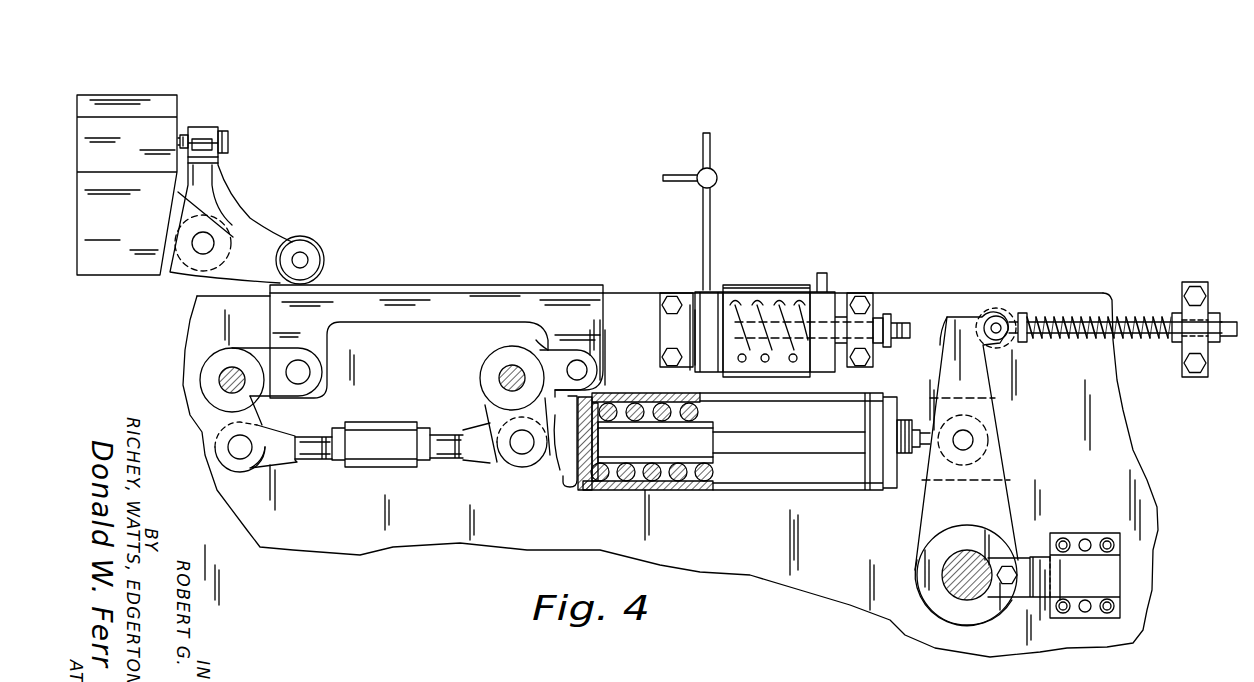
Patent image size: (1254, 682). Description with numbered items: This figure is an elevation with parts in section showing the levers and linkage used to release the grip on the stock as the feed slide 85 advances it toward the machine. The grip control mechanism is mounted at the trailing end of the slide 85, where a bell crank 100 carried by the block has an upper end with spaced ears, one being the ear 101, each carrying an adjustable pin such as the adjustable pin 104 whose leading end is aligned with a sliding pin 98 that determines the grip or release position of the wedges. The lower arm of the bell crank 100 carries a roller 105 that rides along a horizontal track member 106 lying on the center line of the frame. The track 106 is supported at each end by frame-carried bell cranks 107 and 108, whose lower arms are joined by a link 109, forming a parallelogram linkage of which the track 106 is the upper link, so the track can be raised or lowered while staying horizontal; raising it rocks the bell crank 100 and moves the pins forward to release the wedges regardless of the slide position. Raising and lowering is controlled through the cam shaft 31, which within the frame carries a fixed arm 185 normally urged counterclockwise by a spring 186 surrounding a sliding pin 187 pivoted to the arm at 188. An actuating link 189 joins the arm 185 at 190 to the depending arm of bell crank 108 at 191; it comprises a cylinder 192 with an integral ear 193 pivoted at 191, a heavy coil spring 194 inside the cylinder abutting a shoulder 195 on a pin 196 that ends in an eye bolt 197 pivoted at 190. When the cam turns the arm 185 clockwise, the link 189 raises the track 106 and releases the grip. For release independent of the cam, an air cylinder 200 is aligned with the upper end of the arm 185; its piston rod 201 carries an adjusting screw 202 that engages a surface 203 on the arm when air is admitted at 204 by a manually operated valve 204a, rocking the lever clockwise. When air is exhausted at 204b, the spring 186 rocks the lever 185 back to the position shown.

The cam shaft 31 is at (960, 596).
The feed slide 85 is at (128, 265).
The sliding pin 98 is at (186, 134).
The bell crank 100 is at (258, 218).
The ear 101 is at (208, 127).
The adjustable pin 104 is at (229, 142).
The roller 105 is at (320, 250).
The horizontal track member 106 is at (440, 283).
The bell crank 107 is at (260, 352).
The bell crank 108 is at (545, 355).
The link 109 is at (282, 450).
The arm 185 is at (935, 498).
The spring 186 is at (1126, 340).
The sliding pin 187 is at (1024, 342).
The pivot 188 is at (997, 318).
The actuating link 189 is at (814, 490).
The pivot 190 is at (972, 440).
The pivot 191 is at (517, 452).
The cylinder 192 is at (700, 489).
The ear 193 is at (558, 470).
The coil spring 194 is at (635, 480).
The shoulder 195 is at (594, 412).
The pin 196 is at (698, 440).
The eye bolt 197 is at (922, 433).
The air cylinder 200 is at (780, 290).
The piston rod 201 is at (868, 318).
The adjusting screw 202 is at (900, 326).
The surface 203 is at (945, 328).
The air inlet 204 is at (713, 152).
The manually operated valve 204a is at (718, 178).
The air exhaust 204b is at (684, 182).